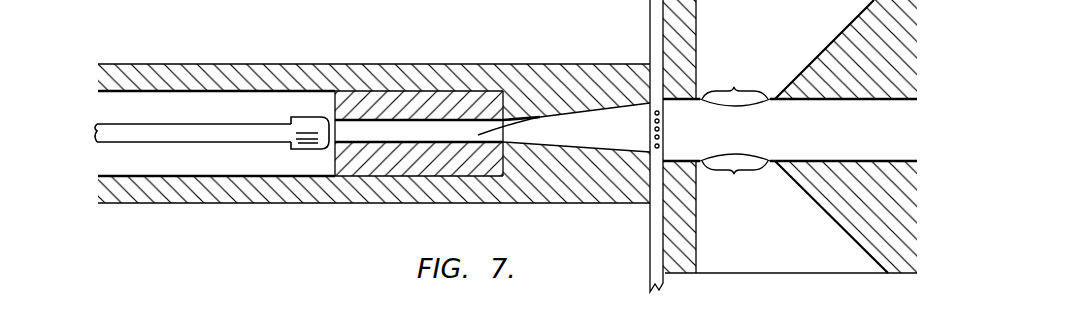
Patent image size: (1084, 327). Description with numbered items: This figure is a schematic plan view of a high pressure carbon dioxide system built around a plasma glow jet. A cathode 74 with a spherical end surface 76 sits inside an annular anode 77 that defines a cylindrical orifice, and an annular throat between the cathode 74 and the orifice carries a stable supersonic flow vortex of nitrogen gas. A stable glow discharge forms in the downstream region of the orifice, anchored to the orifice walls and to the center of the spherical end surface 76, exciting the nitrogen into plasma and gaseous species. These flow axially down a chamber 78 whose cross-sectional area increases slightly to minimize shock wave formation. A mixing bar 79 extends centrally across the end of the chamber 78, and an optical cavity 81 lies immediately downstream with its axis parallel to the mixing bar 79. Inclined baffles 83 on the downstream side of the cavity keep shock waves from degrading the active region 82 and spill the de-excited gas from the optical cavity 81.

The cathode 74 is at (253, 128).
The spherical end surface 76 is at (297, 143).
The annular anode 77 is at (359, 98).
The chamber 78 is at (513, 122).
The mixing bar 79 is at (652, 128).
The optical cavity 81 is at (735, 131).
The active region 82 is at (747, 140).
The baffles 83 is at (832, 42).